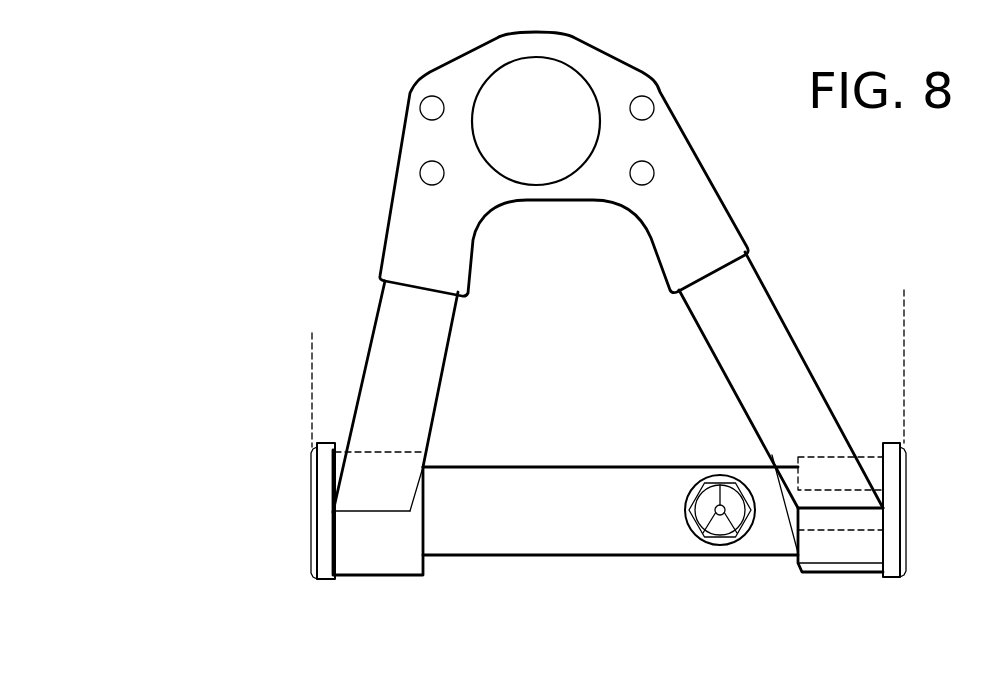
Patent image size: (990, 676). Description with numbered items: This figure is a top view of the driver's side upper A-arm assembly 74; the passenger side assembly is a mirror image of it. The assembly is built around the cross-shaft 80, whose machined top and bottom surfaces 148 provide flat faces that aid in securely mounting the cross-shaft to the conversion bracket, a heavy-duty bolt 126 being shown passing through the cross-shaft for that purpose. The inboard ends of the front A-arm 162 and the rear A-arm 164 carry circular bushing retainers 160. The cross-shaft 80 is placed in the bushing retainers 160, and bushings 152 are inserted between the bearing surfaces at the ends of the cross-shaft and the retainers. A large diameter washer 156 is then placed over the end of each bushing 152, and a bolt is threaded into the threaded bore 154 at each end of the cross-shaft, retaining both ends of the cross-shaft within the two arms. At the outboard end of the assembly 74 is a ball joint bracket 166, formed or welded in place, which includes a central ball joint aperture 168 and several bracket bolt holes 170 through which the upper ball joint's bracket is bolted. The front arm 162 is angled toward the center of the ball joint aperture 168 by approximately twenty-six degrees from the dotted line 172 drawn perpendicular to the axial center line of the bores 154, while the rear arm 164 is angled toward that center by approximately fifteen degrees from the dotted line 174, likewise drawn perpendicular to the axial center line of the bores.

The upper A-arm assembly 74 is at (802, 237).
The cross-shaft 80 is at (558, 556).
The heavy-duty bolt 126 is at (718, 527).
The machined top and bottom surfaces 148 is at (587, 522).
The bushing 152 is at (323, 582).
The threaded bore 154 is at (873, 530).
The large diameter washer 156 is at (312, 467).
The circular bushing retainer 160 is at (372, 568).
The front A-arm 162 is at (762, 290).
The rear A-arm 164 is at (383, 305).
The ball joint bracket 166 is at (670, 99).
The central ball joint aperture 168 is at (540, 171).
The bracket bolt holes 170 is at (422, 107).
The dotted line 172 is at (907, 325).
The dotted line 174 is at (310, 352).